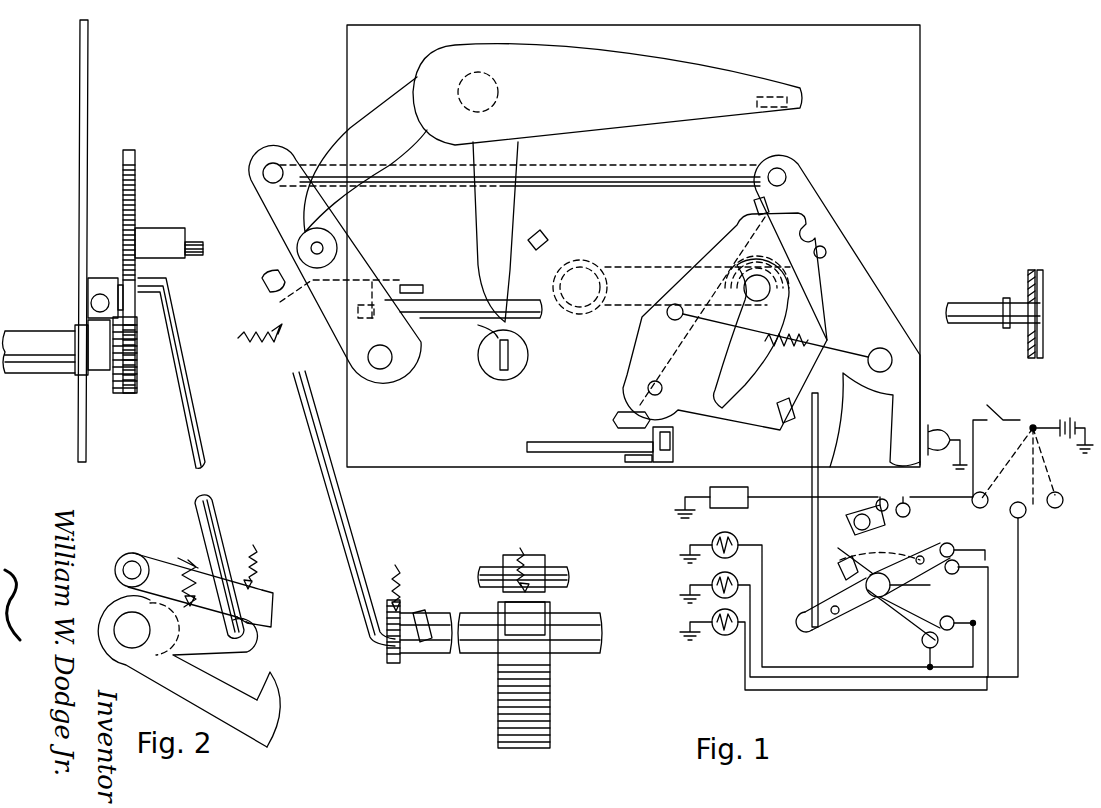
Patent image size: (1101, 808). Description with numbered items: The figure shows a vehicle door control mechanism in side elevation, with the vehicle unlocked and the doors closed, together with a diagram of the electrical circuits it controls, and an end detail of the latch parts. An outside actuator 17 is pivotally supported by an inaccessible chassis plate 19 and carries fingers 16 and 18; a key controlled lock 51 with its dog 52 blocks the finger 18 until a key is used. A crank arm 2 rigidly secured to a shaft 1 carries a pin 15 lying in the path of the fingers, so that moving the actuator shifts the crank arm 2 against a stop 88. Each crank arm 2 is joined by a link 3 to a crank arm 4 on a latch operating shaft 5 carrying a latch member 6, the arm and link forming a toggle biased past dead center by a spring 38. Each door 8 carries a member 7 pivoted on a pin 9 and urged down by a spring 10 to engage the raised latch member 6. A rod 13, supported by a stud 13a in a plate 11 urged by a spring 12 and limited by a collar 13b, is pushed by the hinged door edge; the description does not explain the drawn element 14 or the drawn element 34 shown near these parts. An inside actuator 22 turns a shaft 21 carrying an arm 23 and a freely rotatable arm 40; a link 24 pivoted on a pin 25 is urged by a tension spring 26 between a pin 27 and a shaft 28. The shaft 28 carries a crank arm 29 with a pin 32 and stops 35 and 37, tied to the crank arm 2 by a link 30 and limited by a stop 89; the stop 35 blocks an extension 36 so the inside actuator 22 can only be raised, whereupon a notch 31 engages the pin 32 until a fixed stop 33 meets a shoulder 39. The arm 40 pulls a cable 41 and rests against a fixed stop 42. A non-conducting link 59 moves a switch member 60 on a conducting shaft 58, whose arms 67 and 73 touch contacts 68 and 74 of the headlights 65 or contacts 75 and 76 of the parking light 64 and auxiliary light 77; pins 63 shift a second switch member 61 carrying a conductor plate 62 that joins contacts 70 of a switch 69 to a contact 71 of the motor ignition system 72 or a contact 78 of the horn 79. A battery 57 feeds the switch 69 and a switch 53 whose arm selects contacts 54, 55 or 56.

In FIG. 1, the shaft 1 is at (38, 300).
In FIG. 1, the crank arm 2 is at (135, 176).
In FIG. 1, the link 3 is at (182, 447).
In FIG. 2, the link 3 is at (220, 536).
In FIG. 2, the crank arm 4 is at (245, 640).
In FIG. 2, the latch operating shaft 5 is at (150, 632).
In FIG. 2, the latch member 6 is at (275, 712).
In FIG. 2, the member 7 is at (257, 600).
In FIG. 1, the door 8 is at (1043, 330).
In FIG. 2, the pin 9 is at (123, 570).
In FIG. 2, the spring 10 is at (255, 577).
In FIG. 1, the plate 11 is at (112, 282).
In FIG. 1, the spring 12 is at (252, 325).
In FIG. 1, the rod 13 is at (458, 300).
In FIG. 1, the stud 13a is at (357, 316).
In FIG. 1, the collar 13b is at (1005, 330).
In FIG. 1, the gear hub 14 is at (138, 333).
In FIG. 1, the pin 15 is at (200, 228).
In FIG. 1, the finger 16 is at (388, 120).
In FIG. 1, the actuator 17 is at (672, 92).
In FIG. 1, the finger 18 is at (508, 230).
In FIG. 1, the chassis plate 19 is at (80, 218).
In FIG. 1, the shaft 21 is at (776, 292).
In FIG. 1, the inside actuator 22 is at (645, 275).
In FIG. 1, the arm 23 is at (718, 350).
In FIG. 1, the link 24 is at (735, 240).
In FIG. 1, the pin 25 is at (647, 388).
In FIG. 1, the tension spring 26 is at (820, 340).
In FIG. 1, the pin 27 is at (666, 314).
In FIG. 1, the shaft 28 is at (893, 362).
In FIG. 1, the crank arm 29 is at (850, 270).
In FIG. 1, the link 30 is at (655, 175).
In FIG. 1, the notch 31 is at (814, 232).
In FIG. 1, the pin 32 is at (828, 250).
In FIG. 1, the fixed stop 33 is at (792, 97).
In FIG. 1, the stop plate 34 is at (412, 282).
In FIG. 1, the stop 35 is at (795, 400).
In FIG. 1, the extension 36 is at (785, 422).
In FIG. 1, the stop 37 is at (898, 425).
In FIG. 2, the spring 38 is at (190, 558).
In FIG. 1, the shoulder 39 is at (615, 418).
In FIG. 1, the arm 40 is at (673, 442).
In FIG. 1, the cable 41 is at (560, 440).
In FIG. 1, the fixed stop 42 is at (640, 462).
In FIG. 1, the lock 51 is at (490, 355).
In FIG. 1, the dog 52 is at (473, 328).
In FIG. 1, the switch 53 is at (1023, 462).
In FIG. 1, the contact 54 is at (1070, 491).
In FIG. 1, the contact 55 is at (1017, 582).
In FIG. 1, the contact 56 is at (994, 492).
In FIG. 1, the battery 57 is at (1080, 418).
In FIG. 1, the shaft 58 is at (900, 612).
In FIG. 1, the link 59 is at (811, 575).
In FIG. 1, the switch member 60 is at (862, 612).
In FIG. 1, the switch member 61 is at (850, 557).
In FIG. 1, the conductor plate 62 is at (855, 512).
In FIG. 1, the pin 63 is at (925, 557).
In FIG. 1, the parking light 64 is at (834, 619).
In FIG. 1, the headlights 65 is at (826, 594).
In FIG. 1, the arm 67 is at (975, 560).
In FIG. 1, the contact 68 is at (957, 546).
In FIG. 1, the switch 69 is at (1003, 410).
In FIG. 1, the contact 70 is at (898, 562).
In FIG. 1, the contact 71 is at (888, 504).
In FIG. 1, the motor ignition system 72 is at (712, 485).
In FIG. 1, the arm 73 is at (918, 600).
In FIG. 1, the contact 74 is at (949, 630).
In FIG. 1, the contact 75 is at (922, 645).
In FIG. 1, the contact 76 is at (956, 573).
In FIG. 1, the auxiliary light 77 is at (833, 644).
In FIG. 1, the contact 78 is at (921, 498).
In FIG. 1, the horn 79 is at (957, 440).
In FIG. 1, the stop 88 is at (550, 240).
In FIG. 1, the stop 89 is at (752, 204).